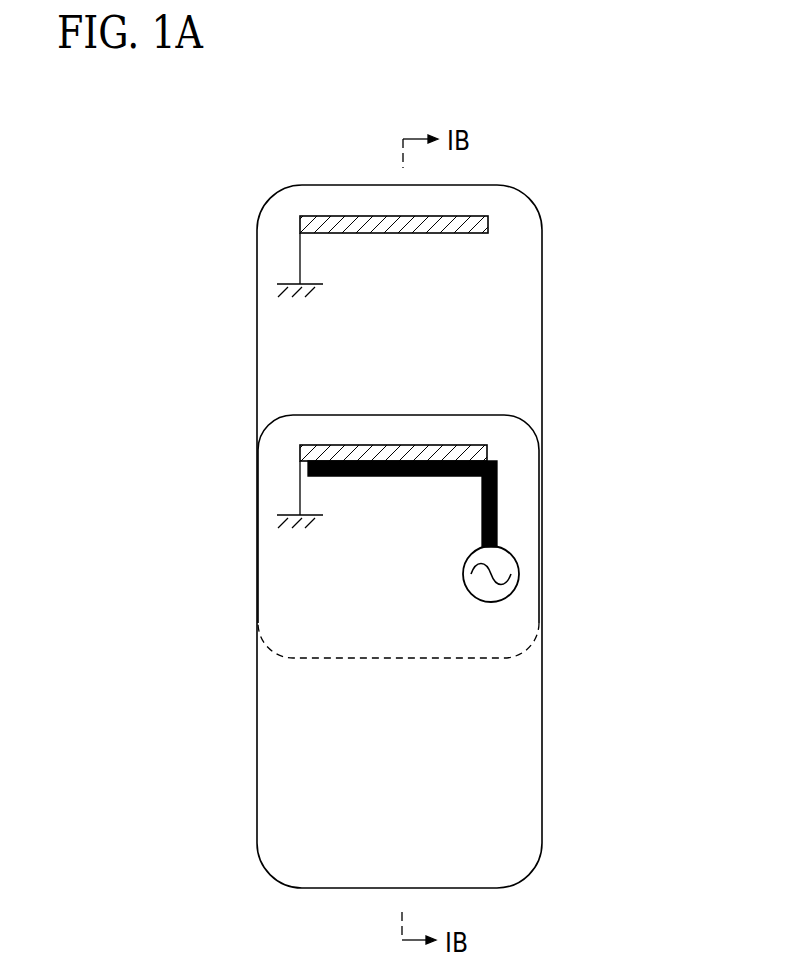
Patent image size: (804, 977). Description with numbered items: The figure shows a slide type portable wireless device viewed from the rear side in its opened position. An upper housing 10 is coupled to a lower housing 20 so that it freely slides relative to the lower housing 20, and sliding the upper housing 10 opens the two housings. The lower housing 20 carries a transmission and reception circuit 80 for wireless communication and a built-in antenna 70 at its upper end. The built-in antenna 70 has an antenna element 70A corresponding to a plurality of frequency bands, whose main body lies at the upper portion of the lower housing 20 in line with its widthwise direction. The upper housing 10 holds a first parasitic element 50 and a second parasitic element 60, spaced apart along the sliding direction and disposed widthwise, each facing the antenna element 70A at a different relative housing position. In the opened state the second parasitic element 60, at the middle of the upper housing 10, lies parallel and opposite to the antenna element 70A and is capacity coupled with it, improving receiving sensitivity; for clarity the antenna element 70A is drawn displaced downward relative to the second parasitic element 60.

The upper housing 10 is at (542, 267).
The lower housing 20 is at (542, 768).
The first parasitic element 50 is at (350, 216).
The second parasitic element 60 is at (377, 445).
The built-in antenna 70 is at (444, 495).
The antenna element 70A is at (405, 476).
The transmission and reception circuit 80 is at (508, 550).